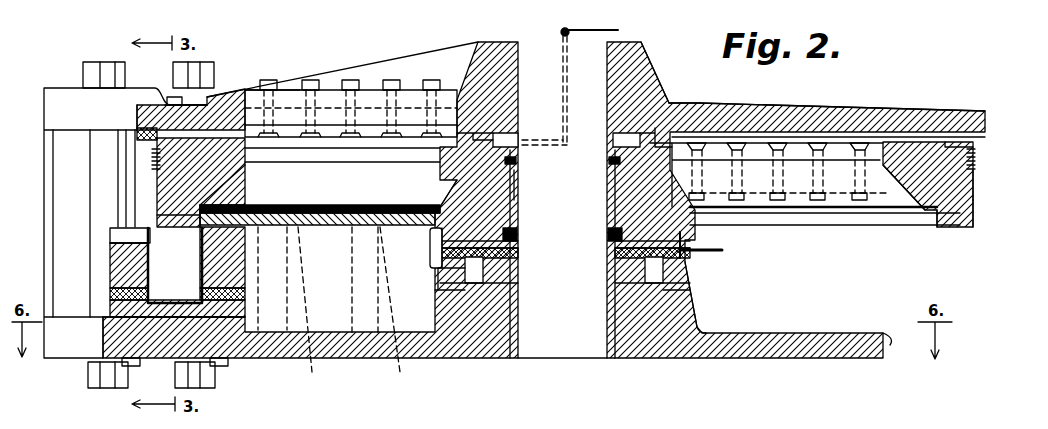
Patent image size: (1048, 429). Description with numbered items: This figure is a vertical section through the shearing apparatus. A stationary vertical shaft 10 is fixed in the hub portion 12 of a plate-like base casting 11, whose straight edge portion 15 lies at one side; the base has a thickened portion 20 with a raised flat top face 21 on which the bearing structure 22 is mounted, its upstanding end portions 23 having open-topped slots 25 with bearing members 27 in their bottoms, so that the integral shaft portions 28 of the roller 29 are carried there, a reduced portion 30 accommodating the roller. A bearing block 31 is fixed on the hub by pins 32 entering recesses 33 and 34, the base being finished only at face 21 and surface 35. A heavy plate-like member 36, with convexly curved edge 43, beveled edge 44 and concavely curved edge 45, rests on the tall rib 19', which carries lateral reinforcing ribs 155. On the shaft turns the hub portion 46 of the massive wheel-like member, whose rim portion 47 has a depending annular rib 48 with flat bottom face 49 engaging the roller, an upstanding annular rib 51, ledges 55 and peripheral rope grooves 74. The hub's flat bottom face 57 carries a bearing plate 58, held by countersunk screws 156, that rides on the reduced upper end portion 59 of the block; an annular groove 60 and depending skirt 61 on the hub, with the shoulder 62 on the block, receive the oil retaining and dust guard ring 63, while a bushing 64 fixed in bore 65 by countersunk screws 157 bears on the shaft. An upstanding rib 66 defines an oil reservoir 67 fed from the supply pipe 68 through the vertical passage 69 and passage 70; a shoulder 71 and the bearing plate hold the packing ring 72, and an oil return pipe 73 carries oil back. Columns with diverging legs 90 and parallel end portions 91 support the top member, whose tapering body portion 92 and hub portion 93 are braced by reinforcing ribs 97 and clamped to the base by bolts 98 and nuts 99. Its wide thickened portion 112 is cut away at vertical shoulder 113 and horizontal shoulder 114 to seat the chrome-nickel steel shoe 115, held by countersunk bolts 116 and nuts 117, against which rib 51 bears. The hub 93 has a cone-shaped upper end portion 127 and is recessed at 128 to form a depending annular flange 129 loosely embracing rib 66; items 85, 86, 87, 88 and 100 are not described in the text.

The shaft 10 is at (565, 340).
The base casting 11 is at (328, 355).
The hub portion 12 is at (697, 326).
The straight edge portion 15 is at (888, 346).
The rib 19' is at (317, 206).
The thickened portion 20 is at (258, 305).
The raised flat top face 21 is at (120, 338).
The bearing structure 22 is at (258, 283).
The upstanding end portions 23 is at (112, 236).
The slots 25 is at (110, 245).
The bearing members 27 is at (110, 292).
The integral shaft portions 28 is at (110, 268).
The roller 29 is at (148, 218).
The reduced portion 30 is at (185, 358).
The bearing block 31 is at (695, 288).
The pins 32 is at (437, 291).
The recesses 33 is at (518, 305).
The recesses 34 is at (518, 262).
The surface 35 is at (518, 278).
The plate-like member 36 is at (350, 213).
The convexly curved outer vertical edge portion 43 is at (228, 198).
The beveled edge portion 44 is at (247, 206).
The concavely curved edge portion 45 is at (440, 207).
The hub portion 46 is at (632, 206).
The rim portion 47 is at (945, 178).
The depending annular rib 48 is at (975, 216).
The flat bottom face 49 is at (155, 216).
The upstanding annular rib 51 is at (955, 136).
The ledges 55 is at (910, 130).
The flat bottom face 57 is at (440, 272).
The bearing plate 58 is at (608, 241).
The reduced upper end portion 59 is at (690, 246).
The annular groove 60 is at (440, 244).
The depending annular skirt portion 61 is at (430, 248).
The annular shoulder portion 62 is at (698, 280).
The ring-like oil retaining and dust guard member 63 is at (697, 220).
The bushing 64 is at (518, 196).
The bore 65 is at (520, 191).
The upstanding annular rib 66 is at (663, 102).
The oil reservoir 67 is at (615, 140).
The oil supply pipe 68 is at (580, 30).
The vertical passage 69 is at (570, 96).
The passage 70 is at (560, 146).
The shoulder 71 is at (607, 256).
The oil retaining packing ring 72 is at (518, 244).
The oil return pipe 73 is at (722, 250).
The annular grooves 74 is at (153, 166).
The stud 85 is at (707, 205).
The edge 86 is at (935, 223).
The edge 87 is at (240, 180).
The inclined wall 88 is at (242, 176).
The diverging legs 90 is at (40, 243).
The parallel end portions 91 is at (48, 192).
The body portion 92 is at (790, 110).
The hub portion 93 is at (650, 68).
The reinforcing ribs 97 is at (390, 58).
The bolts 98 is at (105, 181).
The nuts 99 is at (96, 72).
The arm 100 is at (845, 118).
The wide thickened portion 112 is at (232, 88).
The vertical shoulder 113 is at (214, 97).
The horizontal shoulder 114 is at (168, 100).
The chrome-nickel steel shoe 115 is at (137, 132).
The countersunk bolts 116 is at (135, 112).
The nuts 117 is at (175, 95).
The upper end portion 127 is at (468, 62).
The recess 128 is at (505, 120).
The depending annular flange 129 is at (457, 143).
The lateral reinforcing ribs 155 is at (298, 345).
The countersunk screws 156 is at (518, 233).
The countersunk screws 157 is at (518, 160).